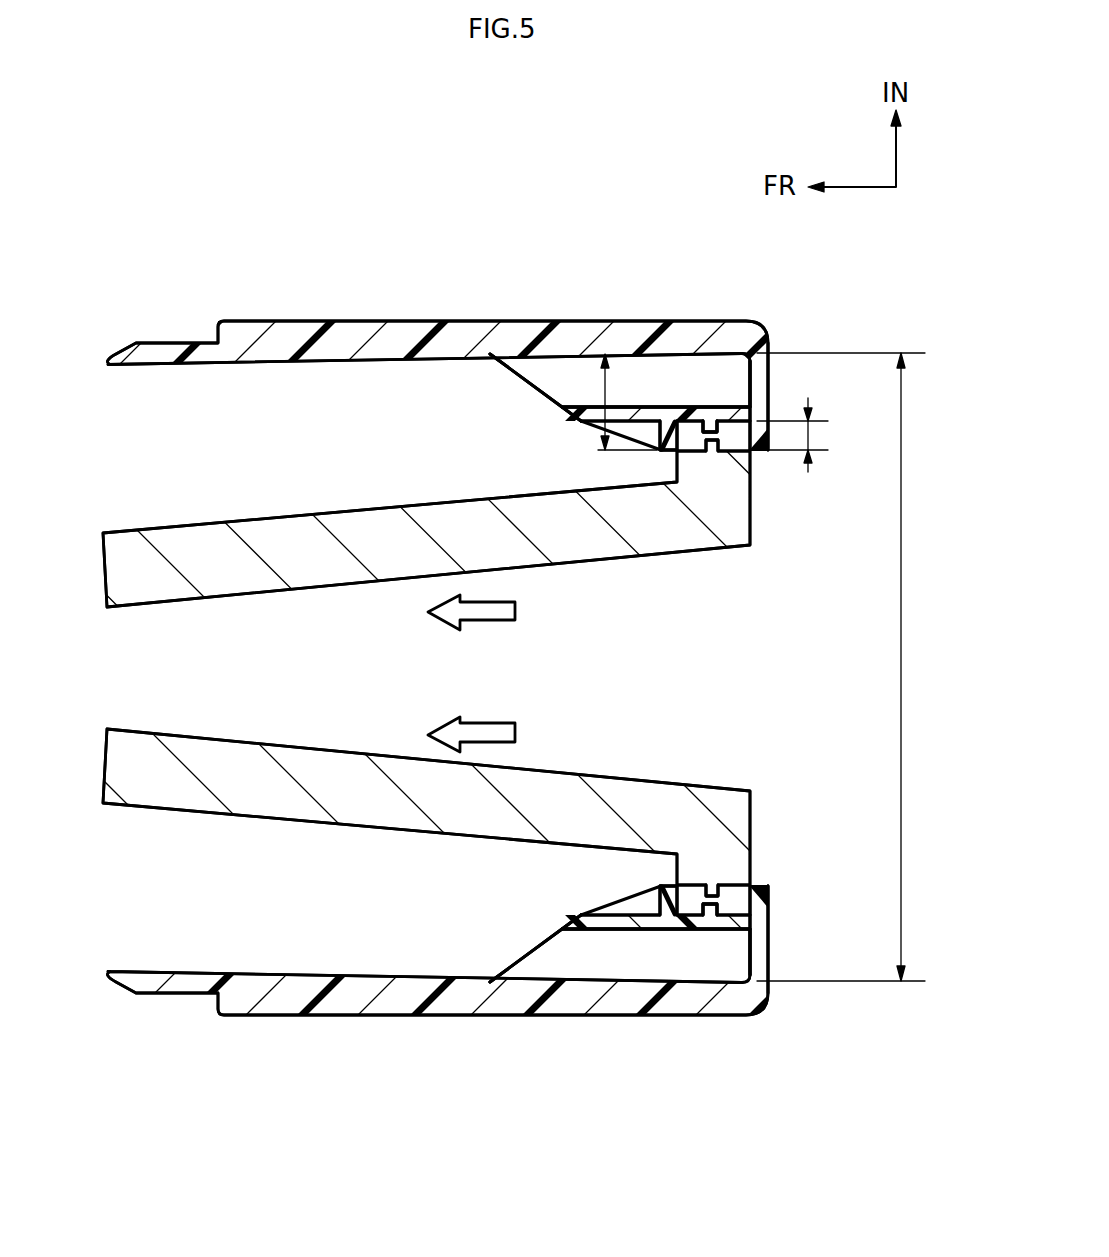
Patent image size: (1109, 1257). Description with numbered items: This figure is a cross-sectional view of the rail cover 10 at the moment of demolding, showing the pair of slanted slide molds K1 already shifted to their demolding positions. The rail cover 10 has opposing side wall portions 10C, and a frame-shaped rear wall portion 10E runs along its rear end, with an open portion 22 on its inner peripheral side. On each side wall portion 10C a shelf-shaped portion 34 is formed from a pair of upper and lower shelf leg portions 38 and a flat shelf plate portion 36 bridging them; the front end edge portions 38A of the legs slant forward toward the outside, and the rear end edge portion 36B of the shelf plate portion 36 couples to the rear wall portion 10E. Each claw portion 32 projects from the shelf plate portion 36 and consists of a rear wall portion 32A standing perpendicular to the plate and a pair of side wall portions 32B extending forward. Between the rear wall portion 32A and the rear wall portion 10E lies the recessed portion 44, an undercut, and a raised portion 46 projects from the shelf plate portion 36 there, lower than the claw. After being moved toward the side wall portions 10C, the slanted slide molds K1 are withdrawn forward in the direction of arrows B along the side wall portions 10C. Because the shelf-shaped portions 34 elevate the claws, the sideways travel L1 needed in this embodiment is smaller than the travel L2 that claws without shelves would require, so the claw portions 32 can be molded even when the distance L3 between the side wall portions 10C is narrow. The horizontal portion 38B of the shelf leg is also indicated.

The rail cover 10 is at (535, 218).
The side wall portion 10C is at (414, 319).
The rear wall portion 10E is at (766, 392).
The open portion 22 is at (764, 455).
The claw portion 32 is at (667, 453).
The rear wall portion 32A is at (683, 455).
The side wall portion 32B is at (657, 452).
The shelf-shaped portion 34 is at (440, 418).
The shelf plate portion 36 is at (590, 428).
The rear end edge portion 36B is at (762, 452).
The shelf leg portion 38 is at (537, 397).
The front end edge portion 38A is at (518, 377).
The horizontal portion of second bracket plate 38B is at (753, 372).
The recessed portion 44 is at (712, 442).
The raised portion 46 is at (700, 432).
The slanted slide mold K1 is at (229, 600).
The arrow B is at (485, 720).
The amount L1 is at (812, 434).
The amount L2 is at (602, 380).
The distance L3 is at (905, 645).